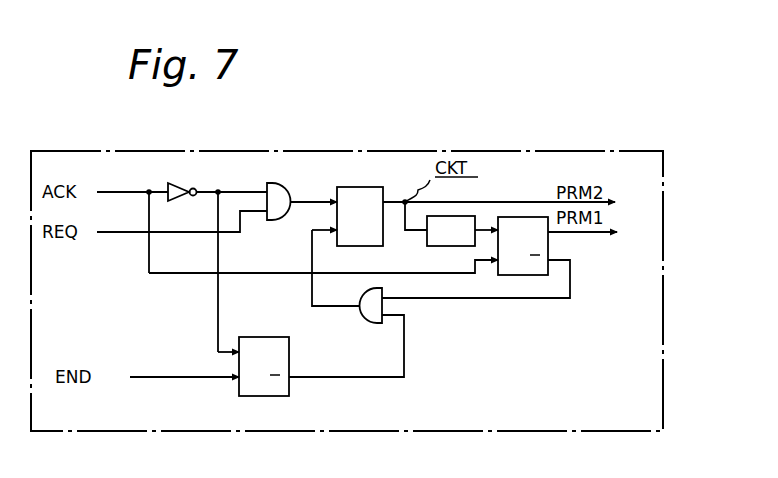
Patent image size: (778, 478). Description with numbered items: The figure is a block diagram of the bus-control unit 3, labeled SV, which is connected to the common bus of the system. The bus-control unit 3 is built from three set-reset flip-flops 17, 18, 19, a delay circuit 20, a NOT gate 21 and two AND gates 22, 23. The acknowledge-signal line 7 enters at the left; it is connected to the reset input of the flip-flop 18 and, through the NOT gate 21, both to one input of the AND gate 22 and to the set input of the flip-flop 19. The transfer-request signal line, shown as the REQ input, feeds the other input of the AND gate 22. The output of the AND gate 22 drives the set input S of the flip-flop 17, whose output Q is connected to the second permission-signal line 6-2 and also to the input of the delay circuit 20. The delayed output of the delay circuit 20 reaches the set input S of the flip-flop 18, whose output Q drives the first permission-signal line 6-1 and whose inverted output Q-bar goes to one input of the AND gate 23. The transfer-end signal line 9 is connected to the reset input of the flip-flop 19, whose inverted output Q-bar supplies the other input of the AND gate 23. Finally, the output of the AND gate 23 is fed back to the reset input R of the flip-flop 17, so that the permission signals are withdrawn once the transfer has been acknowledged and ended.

The bus-control unit 3 is at (600, 432).
The acknowledge-signal line 7 is at (116, 193).
The transfer-end signal line 9 is at (163, 378).
The set-reset flip-flop 17 is at (370, 187).
The set-reset flip-flop 18 is at (524, 276).
The set-reset flip-flop 19 is at (268, 336).
The delay circuit 20 is at (460, 247).
The NOT gate 21 is at (190, 176).
The AND gate 22 is at (294, 178).
The AND gate 23 is at (368, 324).
The first permission-signal line 6-1 is at (601, 236).
The second permission-signal line 6-2 is at (616, 202).